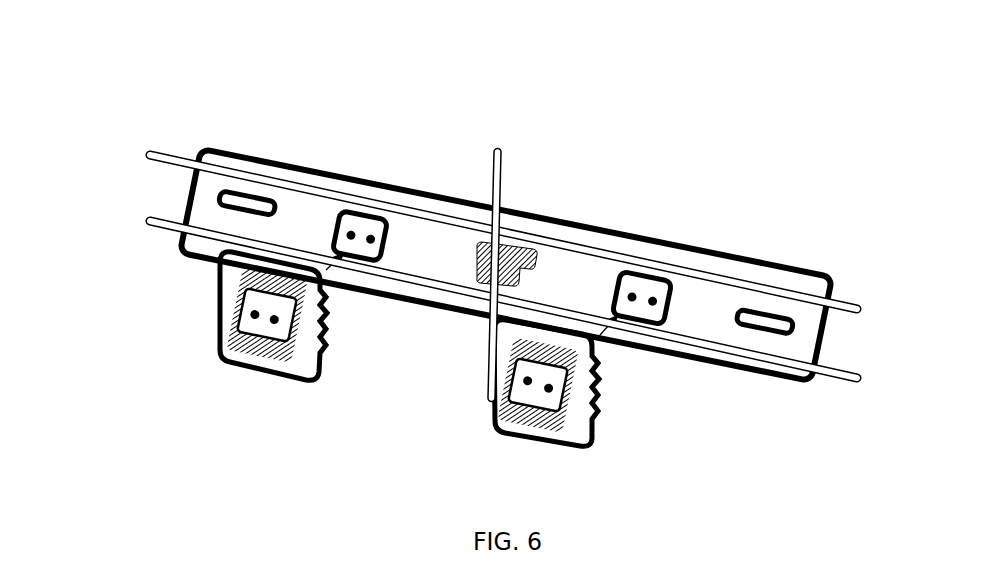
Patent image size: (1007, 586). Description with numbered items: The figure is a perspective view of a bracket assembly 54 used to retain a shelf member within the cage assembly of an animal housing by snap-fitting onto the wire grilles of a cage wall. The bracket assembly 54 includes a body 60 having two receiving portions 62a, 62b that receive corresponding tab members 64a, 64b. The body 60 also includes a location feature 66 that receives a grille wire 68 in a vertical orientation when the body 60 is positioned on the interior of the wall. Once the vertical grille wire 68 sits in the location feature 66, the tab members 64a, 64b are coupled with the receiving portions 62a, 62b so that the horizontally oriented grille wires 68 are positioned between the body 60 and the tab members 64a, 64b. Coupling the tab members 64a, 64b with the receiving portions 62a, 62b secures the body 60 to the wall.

The bracket assembly 54 is at (168, 115).
The body 60 is at (733, 251).
The receiving portion 62a is at (355, 228).
The receiving portion 62b is at (642, 290).
The tab member 64a is at (243, 358).
The tab member 64b is at (493, 420).
The location feature 66 is at (505, 247).
The grille wire 68 is at (503, 165).